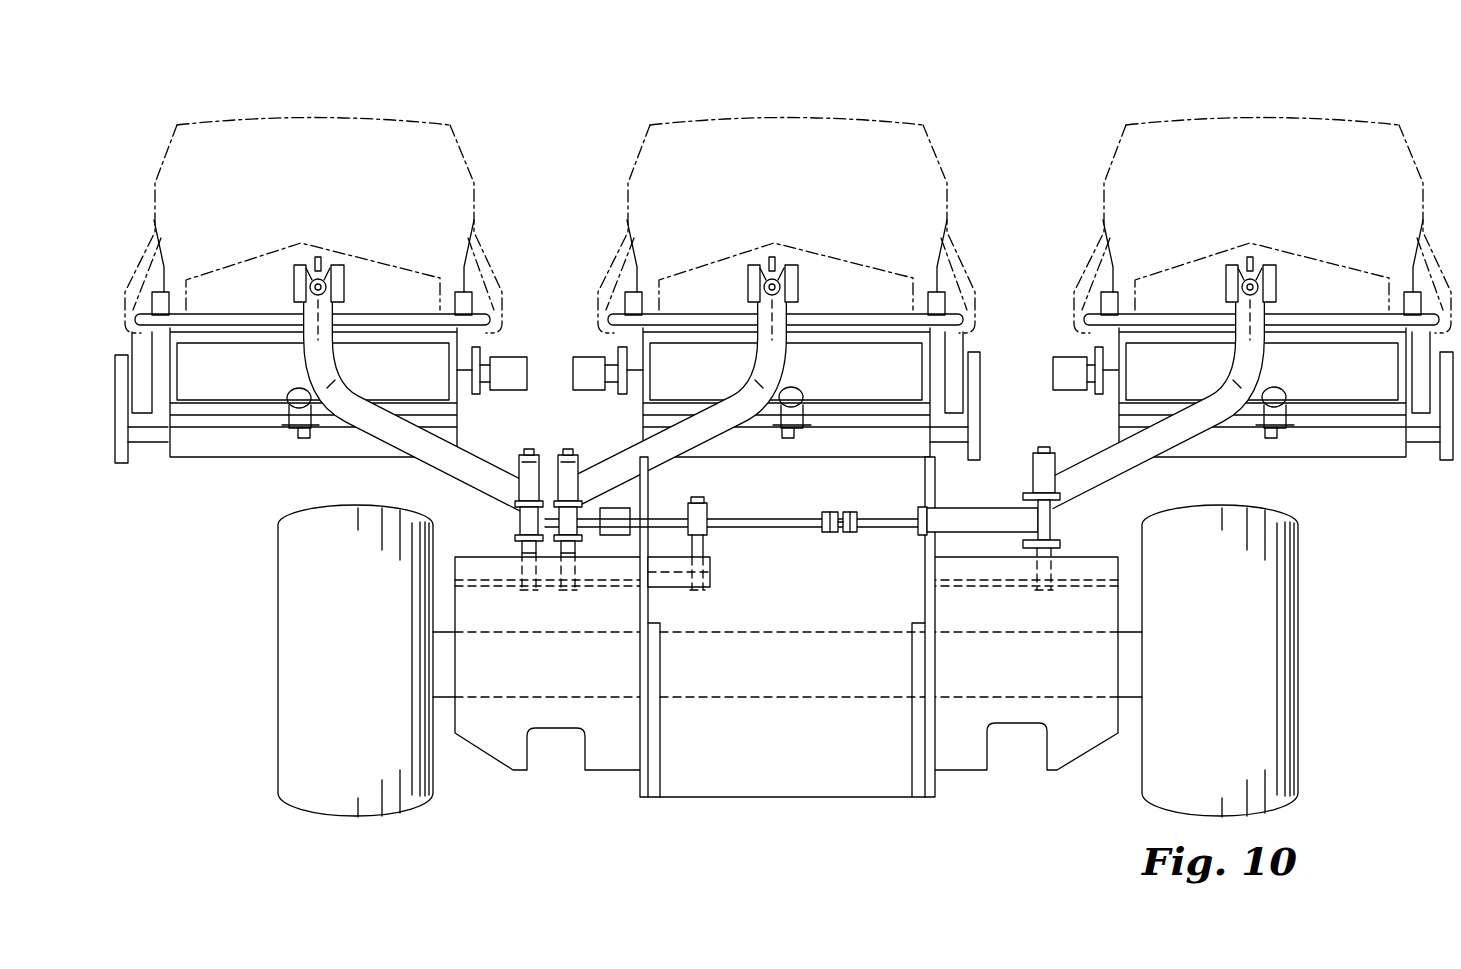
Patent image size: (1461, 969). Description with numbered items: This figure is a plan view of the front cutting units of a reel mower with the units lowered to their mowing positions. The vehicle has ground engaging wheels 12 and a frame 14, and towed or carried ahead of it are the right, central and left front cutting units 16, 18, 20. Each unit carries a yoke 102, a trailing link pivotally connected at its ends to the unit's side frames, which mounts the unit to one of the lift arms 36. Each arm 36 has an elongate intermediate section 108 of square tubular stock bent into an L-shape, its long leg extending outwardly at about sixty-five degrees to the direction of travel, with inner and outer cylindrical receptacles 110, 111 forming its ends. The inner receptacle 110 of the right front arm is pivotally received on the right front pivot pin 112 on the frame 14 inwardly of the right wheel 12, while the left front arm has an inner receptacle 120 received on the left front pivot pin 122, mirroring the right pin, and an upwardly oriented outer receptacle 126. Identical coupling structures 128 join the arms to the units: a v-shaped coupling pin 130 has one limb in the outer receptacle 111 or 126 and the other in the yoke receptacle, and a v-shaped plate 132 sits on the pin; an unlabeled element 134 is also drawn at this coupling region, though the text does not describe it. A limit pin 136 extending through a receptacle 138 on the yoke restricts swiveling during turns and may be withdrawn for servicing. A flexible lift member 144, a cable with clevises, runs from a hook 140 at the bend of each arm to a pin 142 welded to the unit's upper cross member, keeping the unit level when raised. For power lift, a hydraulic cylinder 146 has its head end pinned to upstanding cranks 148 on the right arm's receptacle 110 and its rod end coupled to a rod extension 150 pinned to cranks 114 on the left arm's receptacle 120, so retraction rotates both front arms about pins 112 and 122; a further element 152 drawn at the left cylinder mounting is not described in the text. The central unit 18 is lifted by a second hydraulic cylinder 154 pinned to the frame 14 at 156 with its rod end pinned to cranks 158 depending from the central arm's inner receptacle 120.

The ground engaging wheels 12 is at (278, 588).
The frame 14 is at (1083, 556).
The right front cutting unit 16 is at (1273, 98).
The central front cutting unit 18 is at (762, 113).
The left front cutting unit 20 is at (289, 100).
The lift arms 36 is at (784, 400).
The yoke 102 is at (378, 326).
The elongate intermediate section 108 is at (708, 447).
The inner receptacle 110 is at (551, 462).
The outer receptacle 111 is at (796, 286).
The right front pivot pin 112 is at (1048, 493).
The cranks 114 is at (571, 490).
The receptacle 120 is at (522, 488).
The left front pivot pin 122 is at (486, 504).
The receptacles 126 is at (296, 272).
The coupling structures 128 is at (1225, 293).
The v-shaped coupling pin 130 is at (328, 284).
The v-shaped plate 132 is at (298, 289).
The pivot arm 134 is at (326, 270).
The pin 136 is at (320, 260).
The receptacle 138 is at (313, 265).
The hook 140 is at (299, 388).
The pin 142 is at (304, 439).
The flexible lift member 144 is at (287, 413).
The hydraulic cylinder 146 is at (958, 534).
The cranks 148 is at (1060, 548).
The rod extension 150 is at (796, 528).
The lower connector 152 is at (517, 509).
The hydraulic cylinder 154 is at (647, 535).
The frame pin connection 156 is at (708, 547).
The cranks 158 is at (628, 536).